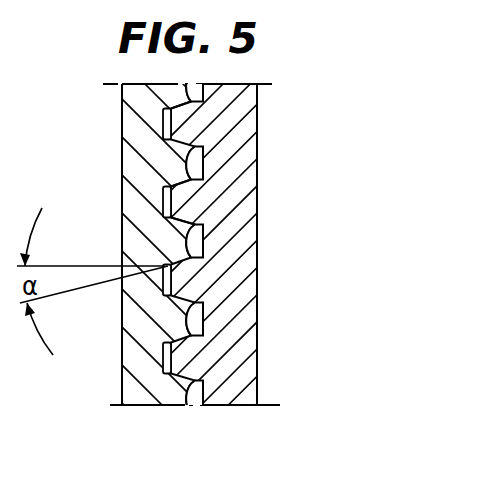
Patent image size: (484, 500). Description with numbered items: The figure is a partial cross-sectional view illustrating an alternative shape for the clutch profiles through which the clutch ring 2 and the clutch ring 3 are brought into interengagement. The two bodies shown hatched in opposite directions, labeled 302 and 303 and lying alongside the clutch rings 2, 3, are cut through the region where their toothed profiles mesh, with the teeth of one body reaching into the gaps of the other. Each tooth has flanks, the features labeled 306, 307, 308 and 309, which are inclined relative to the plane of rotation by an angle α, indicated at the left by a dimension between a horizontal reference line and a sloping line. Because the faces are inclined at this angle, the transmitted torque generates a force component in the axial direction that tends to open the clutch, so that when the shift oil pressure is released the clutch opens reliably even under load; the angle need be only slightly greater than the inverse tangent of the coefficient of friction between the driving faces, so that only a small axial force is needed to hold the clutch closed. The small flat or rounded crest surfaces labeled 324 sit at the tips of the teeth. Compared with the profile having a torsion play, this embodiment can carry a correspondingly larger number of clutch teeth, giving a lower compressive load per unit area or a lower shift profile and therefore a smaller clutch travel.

The threaded rod member 302 is at (257, 252).
The clutch ring 2 is at (296, 260).
The threaded nut member 303 is at (140, 354).
The clutch ring 3 is at (108, 366).
The thread flank 306 is at (188, 125).
The nut thread crest 307 is at (194, 182).
The thread flank 308 is at (185, 208).
The thread flank 309 is at (125, 201).
The rod thread crest land 324 is at (204, 168).